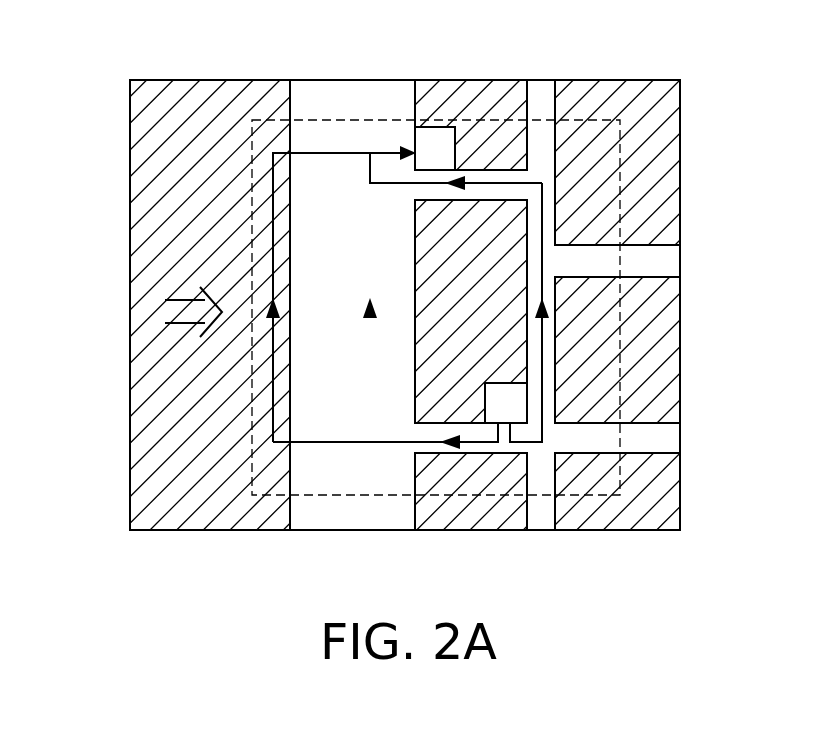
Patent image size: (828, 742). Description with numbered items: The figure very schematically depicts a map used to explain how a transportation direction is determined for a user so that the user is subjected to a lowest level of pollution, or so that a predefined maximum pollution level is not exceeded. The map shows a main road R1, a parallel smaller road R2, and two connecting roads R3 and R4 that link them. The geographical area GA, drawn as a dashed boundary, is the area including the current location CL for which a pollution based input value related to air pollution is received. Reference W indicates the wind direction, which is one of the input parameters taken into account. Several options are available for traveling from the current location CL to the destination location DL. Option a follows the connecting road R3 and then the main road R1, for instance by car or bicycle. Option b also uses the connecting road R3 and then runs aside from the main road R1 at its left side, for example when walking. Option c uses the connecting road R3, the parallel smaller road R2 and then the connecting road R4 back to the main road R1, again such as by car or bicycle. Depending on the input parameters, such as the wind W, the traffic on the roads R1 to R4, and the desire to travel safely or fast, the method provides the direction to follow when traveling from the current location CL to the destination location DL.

The main road R1 is at (343, 130).
The parallel smaller road R2 is at (542, 130).
The connecting road R3 is at (482, 447).
The connecting road R4 is at (493, 178).
The route option a is at (368, 410).
The route option b is at (272, 428).
The route option c is at (543, 262).
The wind direction W is at (184, 298).
The geographical area GA is at (252, 450).
The destination location DL is at (435, 148).
The current location CL is at (506, 403).